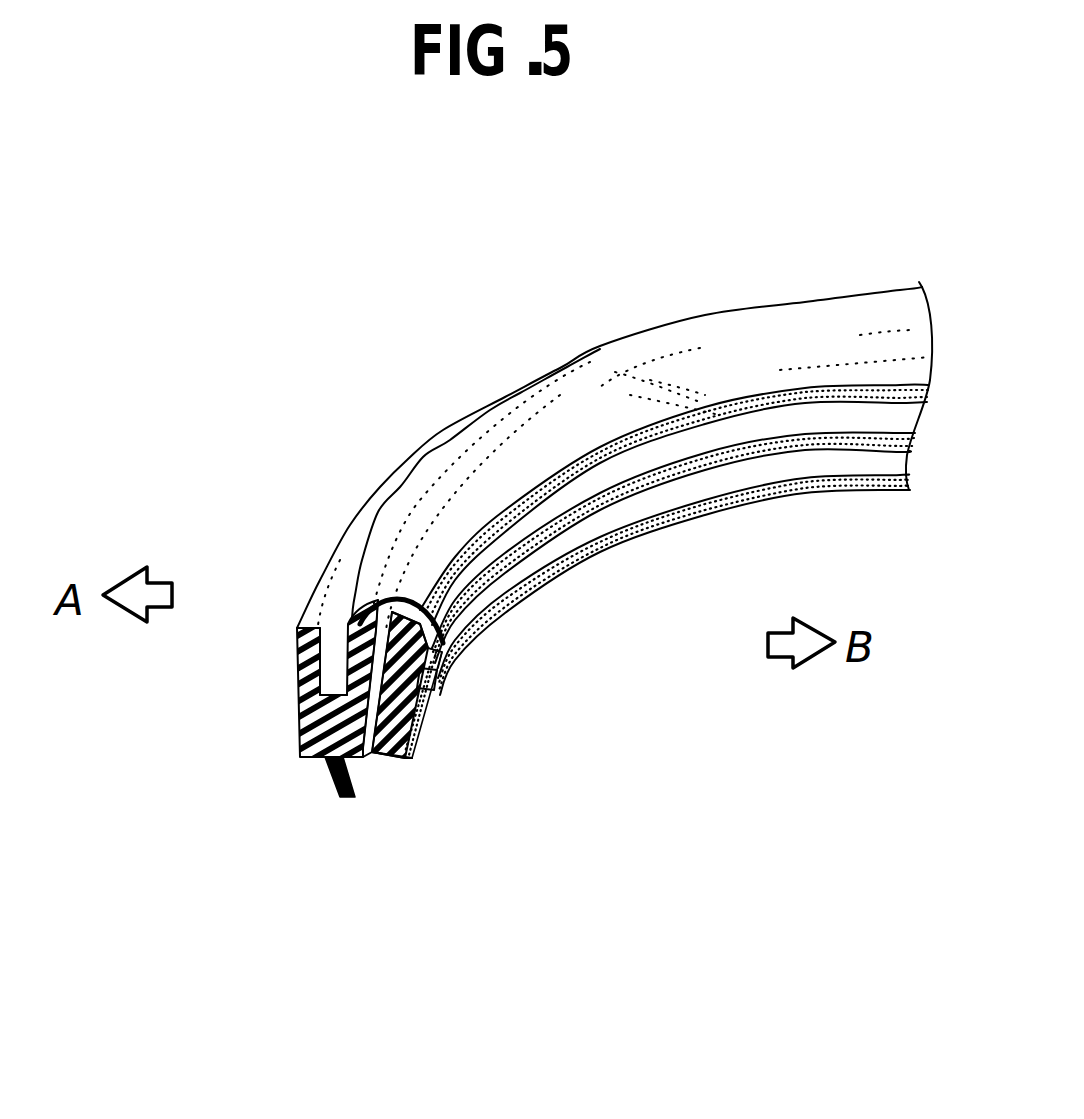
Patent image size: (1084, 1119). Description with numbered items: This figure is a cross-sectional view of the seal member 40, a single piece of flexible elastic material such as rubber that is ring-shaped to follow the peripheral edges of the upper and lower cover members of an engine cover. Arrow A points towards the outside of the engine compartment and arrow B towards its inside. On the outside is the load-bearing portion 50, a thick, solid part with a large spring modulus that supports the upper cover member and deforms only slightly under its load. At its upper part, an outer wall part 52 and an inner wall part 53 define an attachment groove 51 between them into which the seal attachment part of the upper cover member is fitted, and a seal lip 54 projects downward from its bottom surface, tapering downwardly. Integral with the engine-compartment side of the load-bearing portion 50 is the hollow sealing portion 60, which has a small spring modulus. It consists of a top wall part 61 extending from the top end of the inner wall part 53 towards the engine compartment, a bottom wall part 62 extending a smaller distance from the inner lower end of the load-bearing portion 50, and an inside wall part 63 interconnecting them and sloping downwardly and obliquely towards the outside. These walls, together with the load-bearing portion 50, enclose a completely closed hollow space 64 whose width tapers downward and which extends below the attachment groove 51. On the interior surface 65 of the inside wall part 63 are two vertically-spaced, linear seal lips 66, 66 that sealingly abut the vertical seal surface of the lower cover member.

The seal member 40 is at (697, 301).
The load-bearing portion 50 is at (301, 760).
The attachment groove 51 is at (337, 692).
The outer wall part 52 is at (296, 637).
The inner wall part 53 is at (395, 603).
The seal lip 54 is at (340, 798).
The sealing portion 60 is at (420, 750).
The top wall part 61 is at (388, 605).
The bottom wall part 62 is at (382, 762).
The inside wall part 63 is at (445, 680).
The hollow space 64 is at (425, 620).
The interior surface 65 is at (432, 676).
The seal lips 66 is at (455, 648).